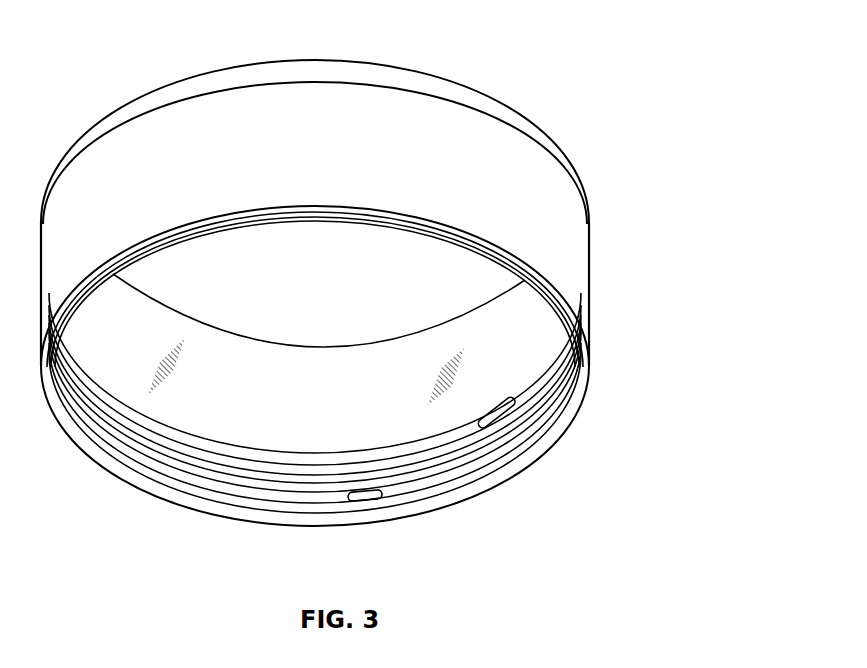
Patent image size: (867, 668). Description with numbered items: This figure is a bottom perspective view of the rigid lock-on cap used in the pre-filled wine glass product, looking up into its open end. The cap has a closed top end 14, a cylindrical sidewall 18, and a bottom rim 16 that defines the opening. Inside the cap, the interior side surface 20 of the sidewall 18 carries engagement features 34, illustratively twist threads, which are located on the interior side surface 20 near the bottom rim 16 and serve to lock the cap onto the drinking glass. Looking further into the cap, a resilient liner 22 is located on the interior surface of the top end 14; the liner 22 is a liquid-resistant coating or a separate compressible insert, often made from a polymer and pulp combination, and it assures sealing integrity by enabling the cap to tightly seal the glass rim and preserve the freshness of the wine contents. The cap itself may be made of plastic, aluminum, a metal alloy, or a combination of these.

The top end 14 is at (470, 88).
The bottom rim 16 is at (532, 468).
The sidewall 18 is at (270, 130).
The interior side surface 20 is at (463, 375).
The resilient liner 22 is at (360, 280).
The engagement features 34 is at (355, 493).